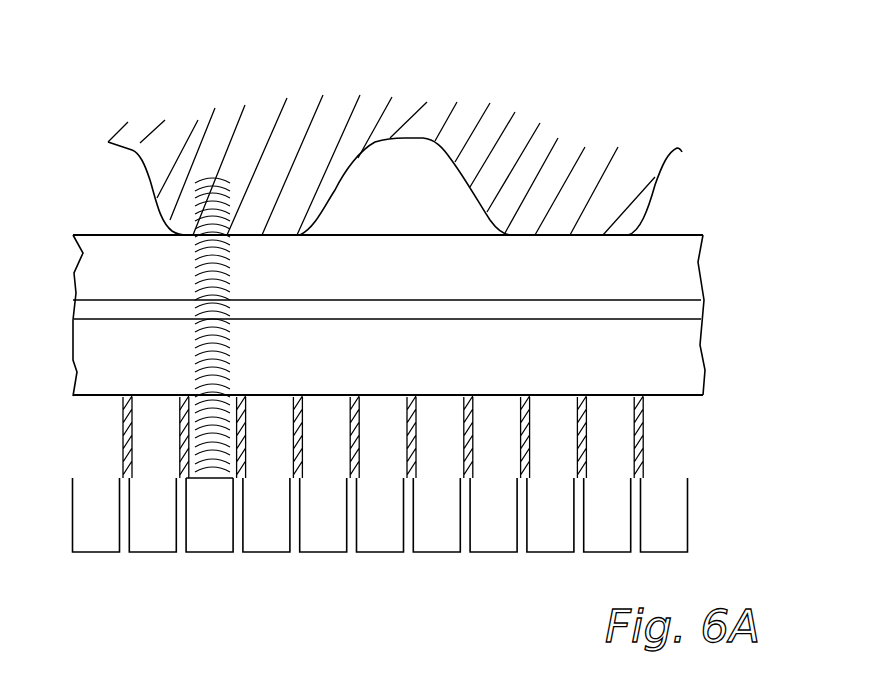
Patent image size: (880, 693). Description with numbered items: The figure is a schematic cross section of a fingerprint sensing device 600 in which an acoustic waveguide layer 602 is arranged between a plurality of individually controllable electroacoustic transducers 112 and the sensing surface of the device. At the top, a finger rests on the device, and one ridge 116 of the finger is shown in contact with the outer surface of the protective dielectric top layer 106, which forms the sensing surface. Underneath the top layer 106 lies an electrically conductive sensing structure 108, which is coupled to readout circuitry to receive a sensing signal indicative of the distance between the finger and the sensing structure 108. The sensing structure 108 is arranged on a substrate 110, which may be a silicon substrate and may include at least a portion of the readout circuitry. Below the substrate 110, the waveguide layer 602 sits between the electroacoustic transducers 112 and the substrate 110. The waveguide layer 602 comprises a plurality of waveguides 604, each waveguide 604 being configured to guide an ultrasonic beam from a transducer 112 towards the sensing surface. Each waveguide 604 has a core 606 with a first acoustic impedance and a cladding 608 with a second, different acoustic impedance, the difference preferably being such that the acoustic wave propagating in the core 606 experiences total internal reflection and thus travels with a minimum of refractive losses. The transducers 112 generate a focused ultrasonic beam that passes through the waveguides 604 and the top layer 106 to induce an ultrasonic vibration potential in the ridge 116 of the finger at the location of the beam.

The fingerprint sensing device 600 is at (665, 70).
The ridge 116 is at (217, 205).
The protective dielectric top layer 106 is at (678, 267).
The electrically conductive sensing structure 108 is at (690, 307).
The substrate 110 is at (678, 360).
The acoustic waveguide layer 602 is at (336, 499).
The waveguide 604 is at (179, 451).
The cladding 608 is at (183, 468).
The electroacoustic transducers 112 is at (215, 537).
The core 606 is at (225, 478).